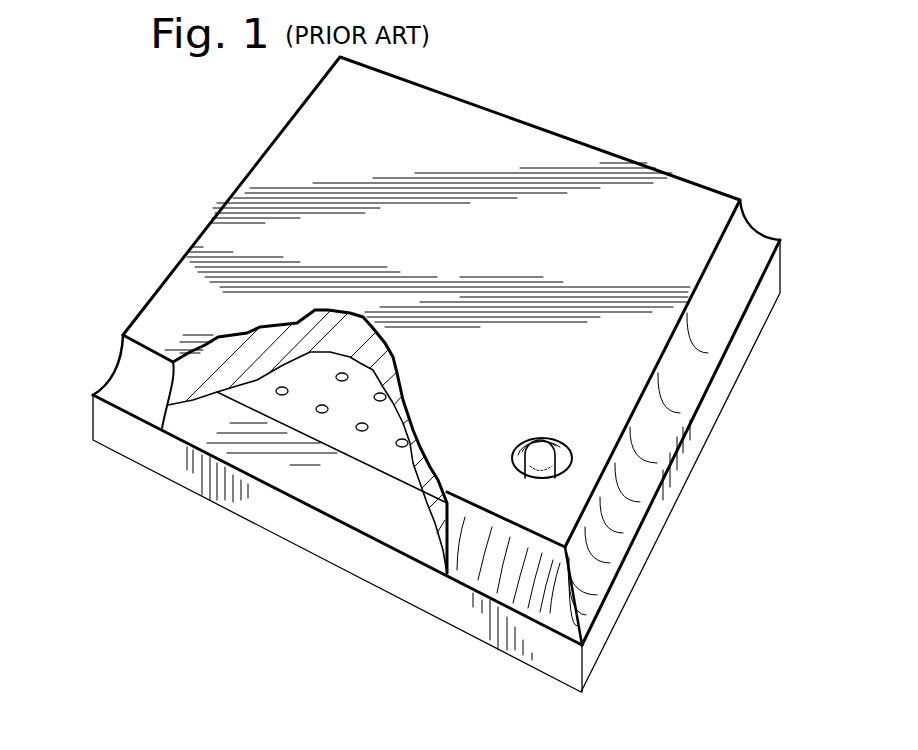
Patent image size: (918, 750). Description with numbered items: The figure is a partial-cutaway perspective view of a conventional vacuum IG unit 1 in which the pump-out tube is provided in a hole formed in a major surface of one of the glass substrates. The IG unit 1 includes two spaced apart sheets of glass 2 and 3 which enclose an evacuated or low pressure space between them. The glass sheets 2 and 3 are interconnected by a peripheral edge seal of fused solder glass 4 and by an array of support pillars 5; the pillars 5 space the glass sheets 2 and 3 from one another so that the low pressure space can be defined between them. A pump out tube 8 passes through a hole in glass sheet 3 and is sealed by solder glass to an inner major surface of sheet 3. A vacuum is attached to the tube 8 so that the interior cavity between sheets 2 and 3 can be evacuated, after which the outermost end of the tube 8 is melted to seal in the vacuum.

The vacuum IG unit 1 is at (116, 197).
The sheet of glass 2 is at (133, 440).
The sheet of glass 3 is at (718, 200).
The edge seal of fused solder glass 4 is at (123, 382).
The support pillars 5 is at (324, 413).
The pump out tube 8 is at (543, 453).